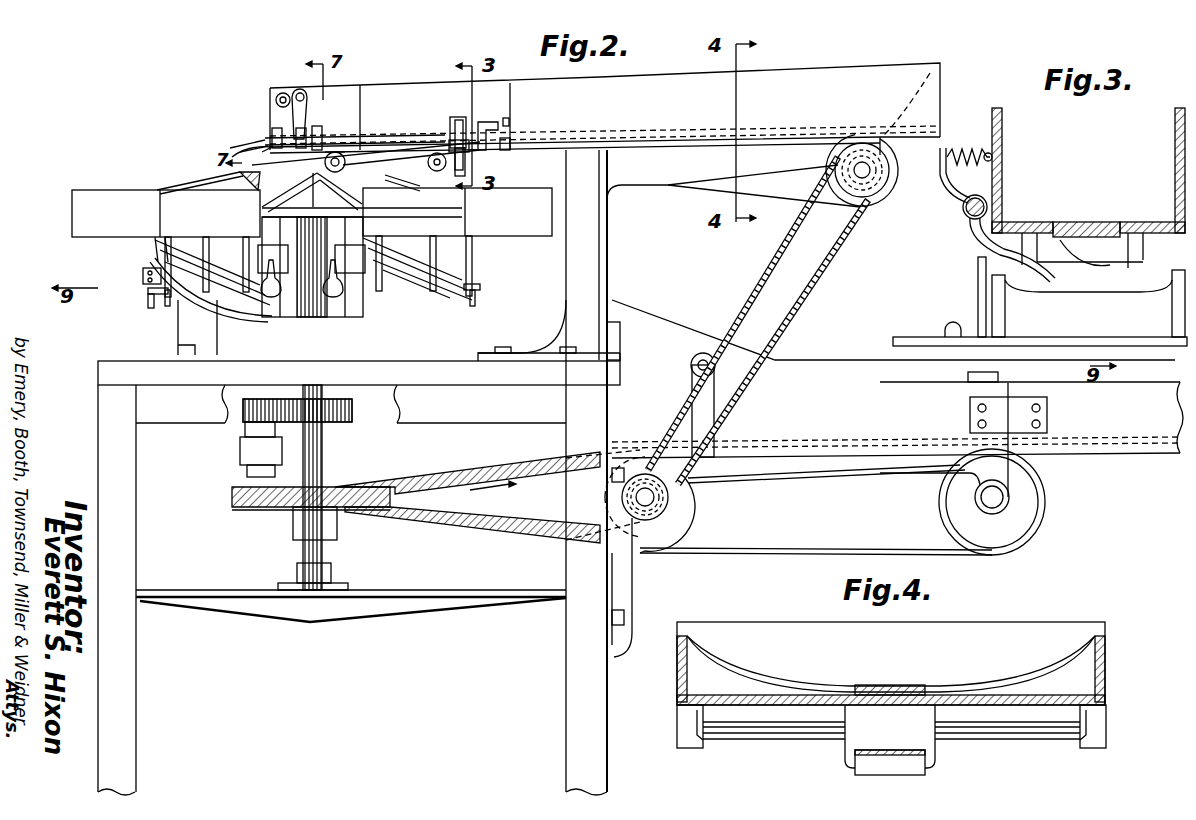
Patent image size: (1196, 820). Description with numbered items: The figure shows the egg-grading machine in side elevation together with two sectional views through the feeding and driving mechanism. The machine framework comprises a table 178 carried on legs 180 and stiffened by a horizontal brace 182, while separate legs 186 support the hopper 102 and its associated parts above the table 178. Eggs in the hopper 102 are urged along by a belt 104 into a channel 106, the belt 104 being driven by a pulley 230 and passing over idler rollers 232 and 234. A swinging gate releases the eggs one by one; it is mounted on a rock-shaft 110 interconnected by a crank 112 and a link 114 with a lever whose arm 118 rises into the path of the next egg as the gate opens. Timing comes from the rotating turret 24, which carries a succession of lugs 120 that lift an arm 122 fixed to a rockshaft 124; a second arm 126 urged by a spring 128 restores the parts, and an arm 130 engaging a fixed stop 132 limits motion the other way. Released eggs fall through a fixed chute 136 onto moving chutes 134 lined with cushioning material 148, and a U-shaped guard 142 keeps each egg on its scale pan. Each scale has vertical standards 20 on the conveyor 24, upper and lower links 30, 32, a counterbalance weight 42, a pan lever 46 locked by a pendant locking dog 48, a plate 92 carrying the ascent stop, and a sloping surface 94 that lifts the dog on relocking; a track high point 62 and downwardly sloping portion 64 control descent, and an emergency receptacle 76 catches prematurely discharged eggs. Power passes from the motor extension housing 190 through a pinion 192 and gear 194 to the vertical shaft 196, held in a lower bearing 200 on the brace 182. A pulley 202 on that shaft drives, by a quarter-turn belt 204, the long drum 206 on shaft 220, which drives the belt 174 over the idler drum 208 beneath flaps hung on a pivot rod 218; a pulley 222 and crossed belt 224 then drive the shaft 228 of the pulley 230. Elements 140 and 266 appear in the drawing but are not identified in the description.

In FIG. 2, the hopper 102 is at (818, 78).
In FIG. 4, the hopper 102 is at (1105, 644).
In FIG. 2, the belt 104 is at (678, 136).
In FIG. 3, the belt 104 is at (1092, 225).
In FIG. 4, the belt 104 is at (905, 687).
In FIG. 3, the channel 106 is at (992, 124).
In FIG. 2, the rock-shaft 110 is at (275, 100).
In FIG. 2, the crank 112 is at (287, 88).
In FIG. 2, the link 114 is at (308, 112).
In FIG. 2, the arm 118 is at (323, 164).
In FIG. 3, the lugs 120 is at (978, 273).
In FIG. 2, the arm 122 is at (456, 170).
In FIG. 3, the arm 122 is at (1058, 278).
In FIG. 2, the rockshaft 124 is at (355, 141).
In FIG. 3, the rockshaft 124 is at (966, 216).
In FIG. 2, the second arm 126 is at (458, 118).
In FIG. 3, the second arm 126 is at (940, 185).
In FIG. 3, the spring 128 is at (966, 162).
In FIG. 2, the arm 130 is at (486, 120).
In FIG. 2, the fixed stop 132 is at (510, 122).
In FIG. 3, the chutes 134 is at (992, 299).
In FIG. 2, the fixed chute 136 is at (236, 154).
In FIG. 2, the link 140 is at (248, 142).
In FIG. 2, the guard 142 is at (190, 188).
In FIG. 2, the cushioning material 148 is at (236, 204).
In FIG. 3, the cushioning material 148 is at (992, 320).
In FIG. 2, the belt 174 is at (860, 553).
In FIG. 2, the table 178 is at (140, 368).
In FIG. 2, the legs 180 is at (118, 490).
In FIG. 2, the horizontal brace 182 is at (404, 590).
In FIG. 2, the legs 186 is at (585, 270).
In FIG. 4, the legs 186 is at (680, 727).
In FIG. 2, the extension housing 190 is at (240, 452).
In FIG. 2, the pinion 192 is at (243, 411).
In FIG. 2, the gear 194 is at (352, 415).
In FIG. 2, the vertical shaft 196 is at (322, 456).
In FIG. 2, the lower bearing 200 is at (297, 575).
In FIG. 2, the pulley 202 is at (270, 510).
In FIG. 2, the quarter turn belt 204 is at (436, 478).
In FIG. 2, the pulley 206 is at (658, 540).
In FIG. 2, the idler drum 208 is at (1025, 499).
In FIG. 2, the pivot rod 218 is at (705, 353).
In FIG. 2, the shaft 220 is at (660, 497).
In FIG. 2, the pulley 222 is at (665, 512).
In FIG. 2, the crossed belt 224 is at (818, 270).
In FIG. 2, the shaft 228 is at (855, 172).
In FIG. 4, the shaft 228 is at (1012, 735).
In FIG. 2, the pulley 230 is at (884, 204).
In FIG. 4, the pulley 230 is at (843, 750).
In FIG. 2, the idler pulley 232 is at (318, 140).
In FIG. 2, the idler pulley 234 is at (440, 146).
In FIG. 3, the idler pulley 234 is at (1125, 262).
In FIG. 2, the pulley groove 266 is at (846, 160).
In FIG. 2, the vertical standards 20 is at (319, 266).
In FIG. 2, the conveyor 24 is at (897, 379).
In FIG. 3, the conveyor 24 is at (1138, 346).
In FIG. 2, the upper link 30 is at (182, 245).
In FIG. 2, the lower link 32 is at (425, 283).
In FIG. 2, the weight 42 is at (300, 307).
In FIG. 2, the lever 46 is at (164, 252).
In FIG. 2, the locking dog 48 is at (168, 306).
In FIG. 2, the high point 62 is at (156, 238).
In FIG. 2, the downwardly sloping portion 64 is at (240, 316).
In FIG. 2, the emergency receptacle 76 is at (216, 330).
In FIG. 2, the plate 92 is at (143, 275).
In FIG. 2, the sloping surface 94 is at (148, 298).